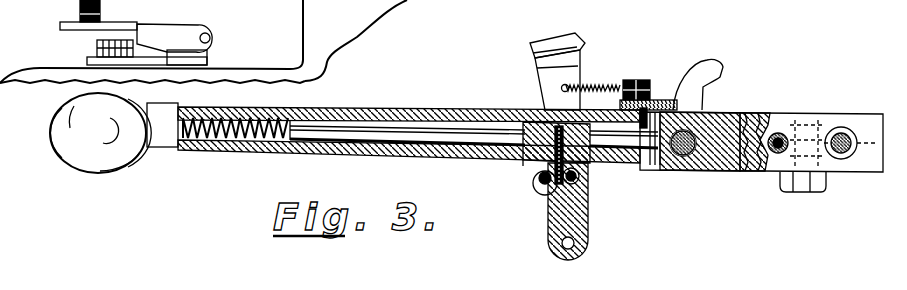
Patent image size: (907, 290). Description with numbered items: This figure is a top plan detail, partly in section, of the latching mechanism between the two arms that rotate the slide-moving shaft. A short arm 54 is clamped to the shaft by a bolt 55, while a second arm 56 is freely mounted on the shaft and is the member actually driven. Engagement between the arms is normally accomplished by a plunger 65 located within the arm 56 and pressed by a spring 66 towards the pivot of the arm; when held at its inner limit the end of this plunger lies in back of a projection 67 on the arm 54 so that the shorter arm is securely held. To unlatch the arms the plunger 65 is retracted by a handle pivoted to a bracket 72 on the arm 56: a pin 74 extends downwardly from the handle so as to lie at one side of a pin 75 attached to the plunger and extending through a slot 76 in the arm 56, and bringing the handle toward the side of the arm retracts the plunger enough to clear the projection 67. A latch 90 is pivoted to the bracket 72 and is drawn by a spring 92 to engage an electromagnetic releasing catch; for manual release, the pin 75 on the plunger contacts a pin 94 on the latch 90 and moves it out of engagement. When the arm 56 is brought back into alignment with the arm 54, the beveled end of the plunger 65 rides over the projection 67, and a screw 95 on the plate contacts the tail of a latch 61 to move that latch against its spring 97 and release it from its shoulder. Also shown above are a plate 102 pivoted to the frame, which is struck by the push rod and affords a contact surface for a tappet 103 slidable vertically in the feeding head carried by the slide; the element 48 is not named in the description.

The tappet 103 is at (72, 11).
The plate 102 is at (127, 20).
The latch 90 is at (558, 34).
The spring 92 is at (608, 85).
The screw 95 is at (648, 80).
The receiver part 48 is at (714, 1).
The latch 61 is at (718, 64).
The spring 97 is at (773, 112).
The second arm 56 is at (333, 107).
The plunger 65 is at (441, 124).
The spring 66 is at (245, 147).
The slot 76 is at (522, 164).
The pin 75 is at (533, 185).
The pin 94 is at (534, 190).
The pin 74 is at (586, 180).
The bracket 72 is at (586, 216).
The projection 67 is at (652, 160).
The short arm 54 is at (718, 172).
The bolt 55 is at (800, 190).